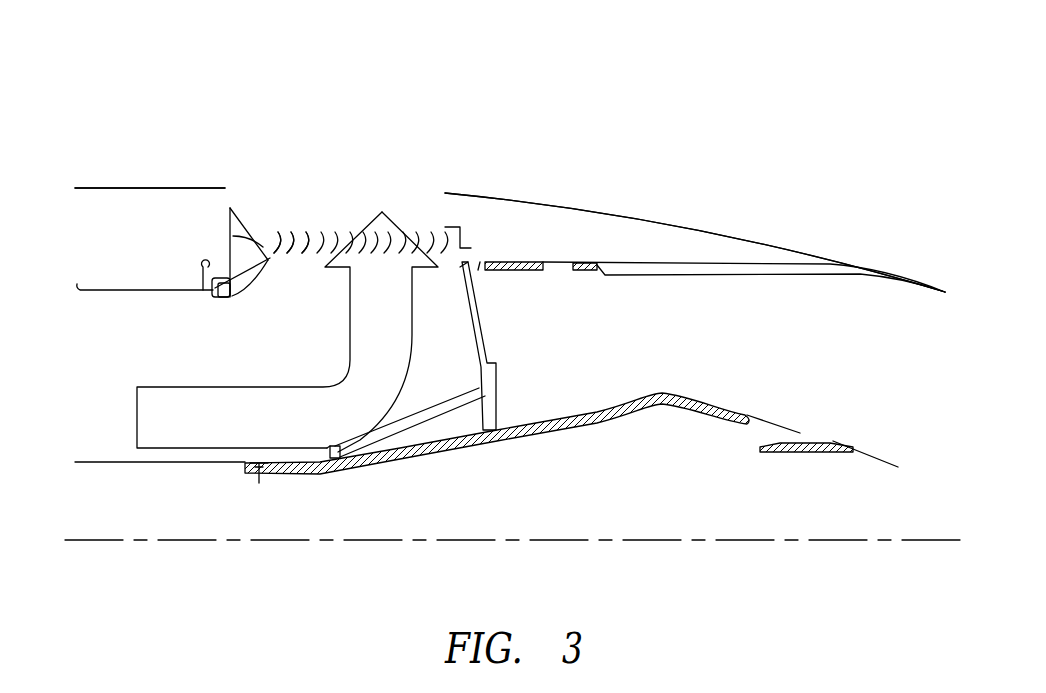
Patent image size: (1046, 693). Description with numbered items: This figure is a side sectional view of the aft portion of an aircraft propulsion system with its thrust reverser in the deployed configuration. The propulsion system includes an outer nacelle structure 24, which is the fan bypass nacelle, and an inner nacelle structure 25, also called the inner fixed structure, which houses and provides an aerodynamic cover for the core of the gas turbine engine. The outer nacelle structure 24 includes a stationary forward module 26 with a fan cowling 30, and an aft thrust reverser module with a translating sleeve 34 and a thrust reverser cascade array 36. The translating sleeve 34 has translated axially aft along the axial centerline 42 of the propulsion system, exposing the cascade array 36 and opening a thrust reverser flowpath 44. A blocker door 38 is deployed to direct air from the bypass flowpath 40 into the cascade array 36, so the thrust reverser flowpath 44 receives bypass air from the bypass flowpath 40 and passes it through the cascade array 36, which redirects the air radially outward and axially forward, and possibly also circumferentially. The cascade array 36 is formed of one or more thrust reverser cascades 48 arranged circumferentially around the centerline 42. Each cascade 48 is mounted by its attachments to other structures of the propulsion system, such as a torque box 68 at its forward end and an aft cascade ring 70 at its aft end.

The outer nacelle structure 24 is at (766, 202).
The inner nacelle structure 25 is at (748, 408).
The stationary forward module 26 is at (105, 180).
The fan cowling 30 is at (148, 187).
The translating sleeve 34 is at (630, 220).
The thrust reverser cascade array 36 is at (425, 230).
The blocker door 38 is at (487, 326).
The bypass flowpath 40 is at (126, 377).
The axial centerline 42 is at (847, 542).
The thrust reverser flowpath 44 is at (311, 217).
The thrust reverser cascade 48 is at (293, 255).
The torque box 68 is at (230, 240).
The aft cascade ring 70 is at (463, 240).